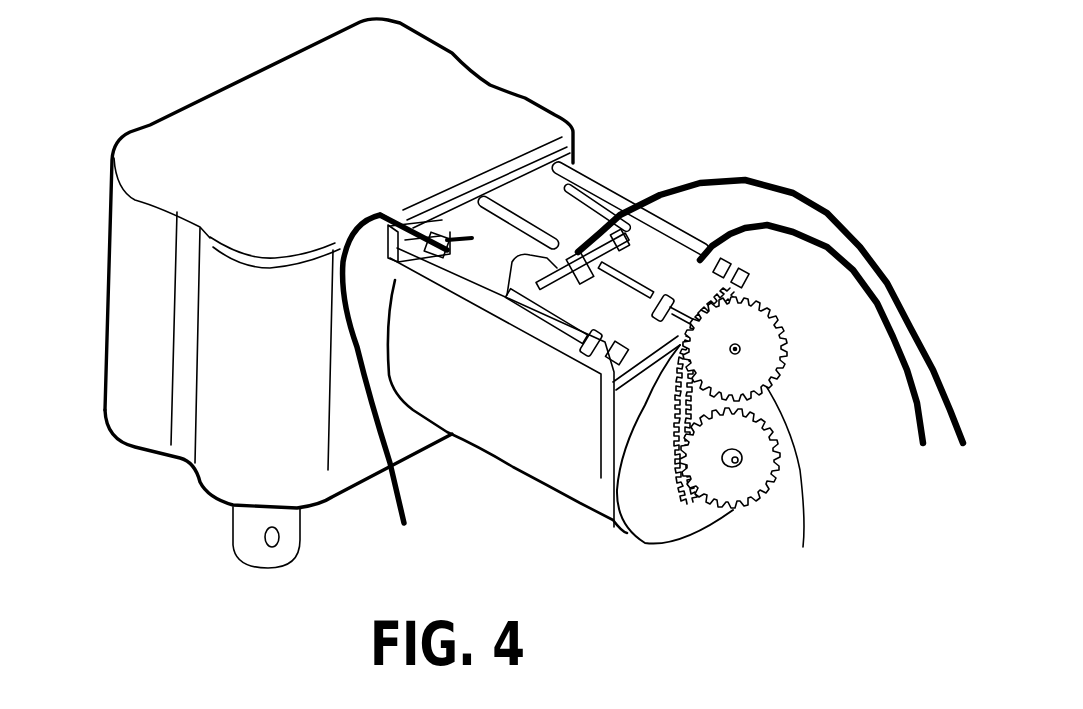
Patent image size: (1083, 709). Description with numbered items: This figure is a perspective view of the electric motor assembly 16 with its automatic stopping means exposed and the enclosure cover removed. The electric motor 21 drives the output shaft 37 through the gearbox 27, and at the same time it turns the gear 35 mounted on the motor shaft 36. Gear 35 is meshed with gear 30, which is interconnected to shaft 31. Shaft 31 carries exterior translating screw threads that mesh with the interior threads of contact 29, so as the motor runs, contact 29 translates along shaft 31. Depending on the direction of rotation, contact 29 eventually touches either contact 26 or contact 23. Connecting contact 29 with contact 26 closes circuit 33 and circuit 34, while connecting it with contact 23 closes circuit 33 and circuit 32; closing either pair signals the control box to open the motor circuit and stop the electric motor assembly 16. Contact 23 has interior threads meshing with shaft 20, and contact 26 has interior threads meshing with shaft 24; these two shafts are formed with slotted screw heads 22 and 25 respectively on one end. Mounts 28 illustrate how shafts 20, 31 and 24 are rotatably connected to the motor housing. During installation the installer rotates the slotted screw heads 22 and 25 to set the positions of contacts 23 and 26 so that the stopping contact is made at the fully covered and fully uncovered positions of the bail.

The electric motor assembly 16 is at (653, 78).
The shaft 20 is at (457, 287).
The electric motor 21 is at (495, 427).
The slotted screw head 22 is at (598, 385).
The contact 23 is at (447, 207).
The shaft 24 is at (600, 190).
The slotted screw head 25 is at (758, 272).
The contact 26 is at (688, 277).
The gearbox 27 is at (233, 120).
The mounts 28 is at (647, 312).
The contact 29 is at (508, 268).
The gear 30 is at (740, 370).
The shaft 31 is at (540, 197).
The circuit 32 is at (340, 335).
The circuit 33 is at (897, 367).
The circuit 34 is at (907, 283).
The gear 35 is at (524, 180).
The motor shaft 36 is at (737, 463).
The output shaft 37 is at (250, 525).